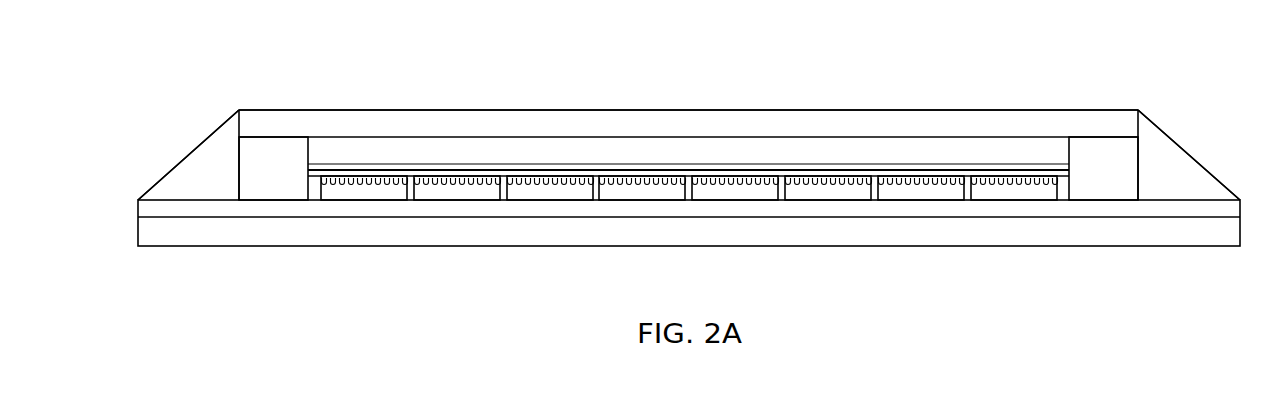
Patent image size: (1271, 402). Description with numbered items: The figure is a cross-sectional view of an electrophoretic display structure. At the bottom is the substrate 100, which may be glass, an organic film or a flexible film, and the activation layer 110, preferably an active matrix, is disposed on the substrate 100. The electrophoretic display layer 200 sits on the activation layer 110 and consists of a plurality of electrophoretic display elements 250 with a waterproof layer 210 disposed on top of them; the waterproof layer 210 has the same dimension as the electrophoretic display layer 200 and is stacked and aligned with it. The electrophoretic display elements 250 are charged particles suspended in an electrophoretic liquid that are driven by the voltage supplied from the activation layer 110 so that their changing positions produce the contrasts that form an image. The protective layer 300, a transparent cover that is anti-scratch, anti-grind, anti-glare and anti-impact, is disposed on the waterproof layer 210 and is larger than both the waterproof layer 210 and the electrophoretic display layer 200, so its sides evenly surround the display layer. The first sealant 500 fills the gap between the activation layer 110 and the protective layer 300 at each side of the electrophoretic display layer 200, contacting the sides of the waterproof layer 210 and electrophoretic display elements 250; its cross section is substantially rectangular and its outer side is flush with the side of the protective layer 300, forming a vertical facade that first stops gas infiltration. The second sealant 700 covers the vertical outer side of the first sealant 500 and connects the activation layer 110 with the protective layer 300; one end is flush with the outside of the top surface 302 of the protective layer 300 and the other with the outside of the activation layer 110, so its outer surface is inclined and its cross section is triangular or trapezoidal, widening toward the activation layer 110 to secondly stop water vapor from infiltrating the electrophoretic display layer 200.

The substrate 100 is at (445, 225).
The activation layer 110 is at (350, 210).
The electrophoretic display layer 200 is at (688, 101).
The waterproof layer 210 is at (543, 150).
The electrophoretic display elements 250 is at (551, 60).
The protective layer 300 is at (331, 123).
The top surface 302 is at (877, 110).
The first sealant 500 is at (250, 188).
The second sealant 700 is at (212, 148).